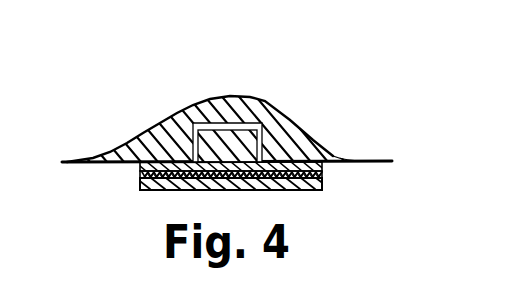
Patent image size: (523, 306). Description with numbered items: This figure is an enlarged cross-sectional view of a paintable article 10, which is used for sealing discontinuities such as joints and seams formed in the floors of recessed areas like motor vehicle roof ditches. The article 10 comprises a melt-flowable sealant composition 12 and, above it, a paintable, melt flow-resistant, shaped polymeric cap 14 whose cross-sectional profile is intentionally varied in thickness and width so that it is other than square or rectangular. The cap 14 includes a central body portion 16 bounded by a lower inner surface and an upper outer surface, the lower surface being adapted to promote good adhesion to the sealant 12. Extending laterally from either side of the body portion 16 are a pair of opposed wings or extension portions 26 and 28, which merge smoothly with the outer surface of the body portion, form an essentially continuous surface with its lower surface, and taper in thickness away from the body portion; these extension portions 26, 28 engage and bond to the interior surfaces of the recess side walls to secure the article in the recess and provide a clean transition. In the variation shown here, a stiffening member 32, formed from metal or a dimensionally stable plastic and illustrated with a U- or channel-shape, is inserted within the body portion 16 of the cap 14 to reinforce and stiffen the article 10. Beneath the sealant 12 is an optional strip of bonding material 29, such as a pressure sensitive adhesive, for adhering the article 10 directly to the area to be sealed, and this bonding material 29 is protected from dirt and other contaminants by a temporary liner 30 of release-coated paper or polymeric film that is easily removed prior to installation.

The paintable article 10 is at (93, 131).
The melt-flowable sealant composition 12 is at (141, 167).
The shaped polymeric cap 14 is at (323, 128).
The central body portion 16 is at (228, 105).
The extension portion 26 is at (128, 146).
The extension portion 28 is at (366, 158).
The bonding material 29 is at (141, 174).
The temporary liner 30 is at (300, 190).
The stiffening member 32 is at (248, 125).